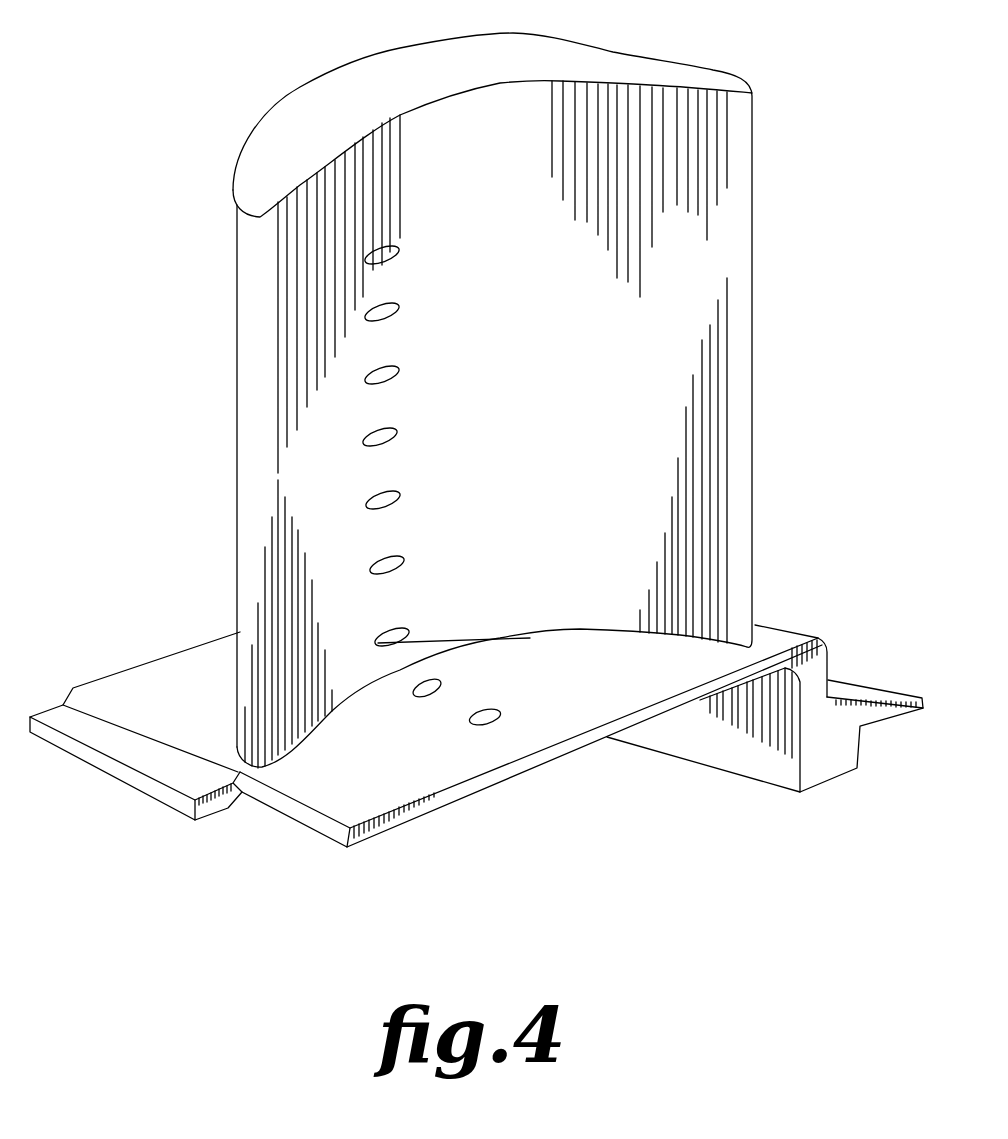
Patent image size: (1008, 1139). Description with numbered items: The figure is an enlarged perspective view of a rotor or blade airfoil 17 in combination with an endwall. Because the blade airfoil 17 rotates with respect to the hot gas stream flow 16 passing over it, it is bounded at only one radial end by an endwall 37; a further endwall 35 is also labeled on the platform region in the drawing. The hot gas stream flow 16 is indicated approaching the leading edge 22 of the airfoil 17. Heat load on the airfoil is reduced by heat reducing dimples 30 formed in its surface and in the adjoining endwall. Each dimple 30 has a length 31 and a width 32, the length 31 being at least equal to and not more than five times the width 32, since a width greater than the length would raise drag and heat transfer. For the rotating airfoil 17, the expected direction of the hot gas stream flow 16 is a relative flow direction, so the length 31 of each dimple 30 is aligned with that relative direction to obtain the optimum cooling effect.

The hot gas stream flow 16 is at (170, 288).
The rotor or blade airfoil 17 is at (553, 341).
The leading edge 22 is at (252, 387).
The heat reducing dimple 30 is at (530, 638).
The length 31 is at (406, 632).
The width 32 is at (393, 630).
The endwall 35 is at (156, 694).
The endwall 37 is at (320, 795).